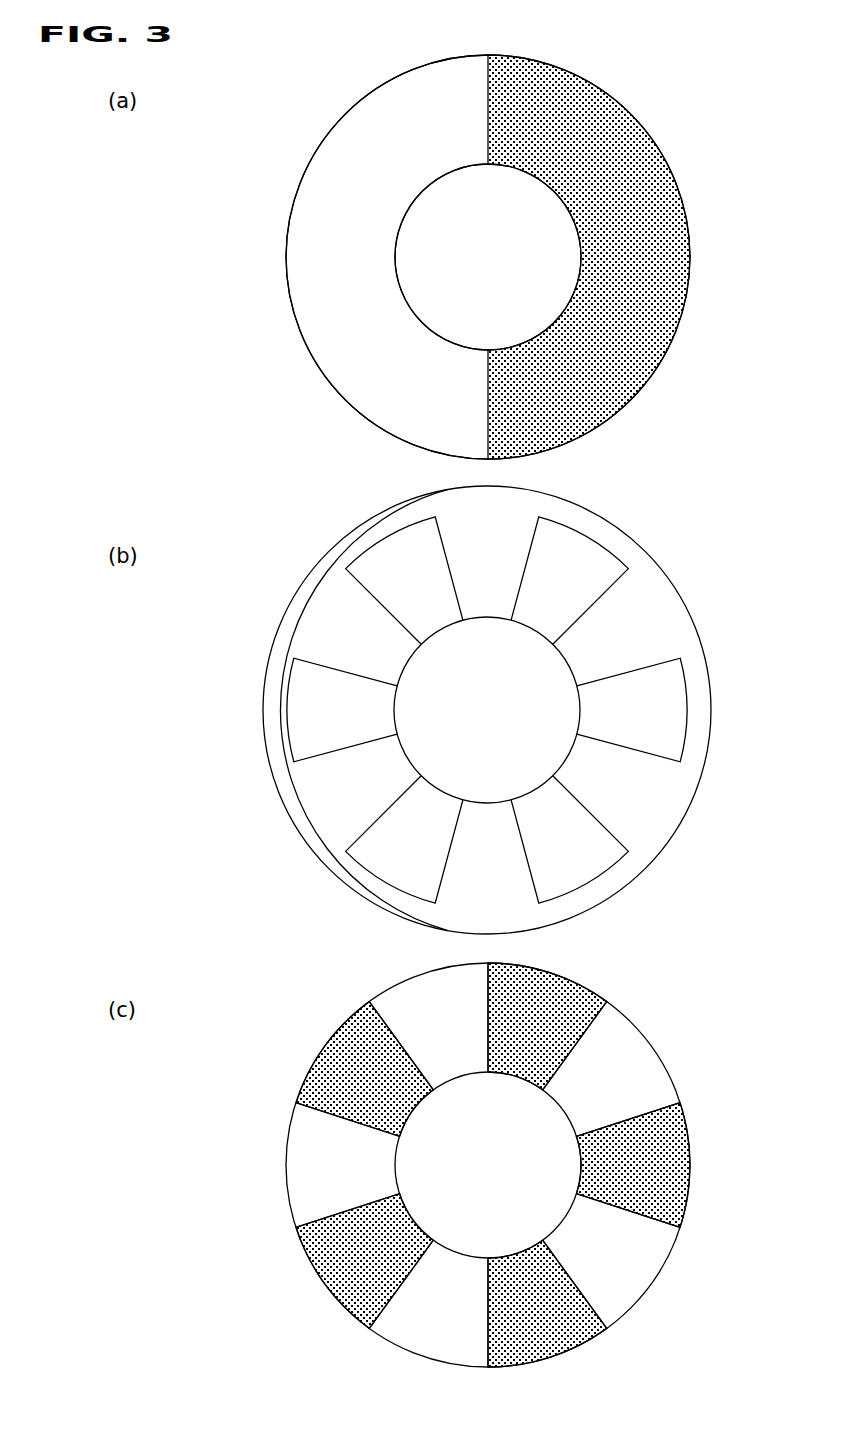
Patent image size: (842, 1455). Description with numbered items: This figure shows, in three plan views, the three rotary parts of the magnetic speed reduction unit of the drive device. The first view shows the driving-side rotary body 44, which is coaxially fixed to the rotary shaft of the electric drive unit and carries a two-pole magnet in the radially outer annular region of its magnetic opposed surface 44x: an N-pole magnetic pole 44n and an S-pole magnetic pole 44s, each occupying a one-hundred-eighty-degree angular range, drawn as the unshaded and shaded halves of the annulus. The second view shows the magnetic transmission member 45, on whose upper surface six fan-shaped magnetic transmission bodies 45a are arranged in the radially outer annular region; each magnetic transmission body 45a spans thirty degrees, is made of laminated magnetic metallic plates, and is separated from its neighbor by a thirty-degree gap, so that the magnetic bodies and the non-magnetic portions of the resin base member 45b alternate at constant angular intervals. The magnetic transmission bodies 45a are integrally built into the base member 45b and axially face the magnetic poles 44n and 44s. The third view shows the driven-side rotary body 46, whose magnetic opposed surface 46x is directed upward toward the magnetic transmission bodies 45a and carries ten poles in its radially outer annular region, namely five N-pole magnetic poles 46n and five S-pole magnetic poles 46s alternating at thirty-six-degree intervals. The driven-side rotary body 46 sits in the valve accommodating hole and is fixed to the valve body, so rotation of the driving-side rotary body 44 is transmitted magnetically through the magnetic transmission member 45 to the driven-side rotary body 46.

The driving-side rotary body 44 is at (484, 257).
The magnetic opposed surface 44x is at (656, 149).
The N-pole magnetic pole 44n is at (288, 258).
The S-pole magnetic pole 44s is at (690, 258).
The magnetic transmission member 45 is at (486, 710).
The magnetic transmission body 45a is at (377, 583).
The base member 45b is at (660, 803).
The driven-side rotary body 46 is at (480, 1165).
The magnetic opposed surface 46x is at (660, 1077).
The N-pole magnetic pole 46n is at (288, 1172).
The S-pole magnetic pole 46s is at (327, 1057).